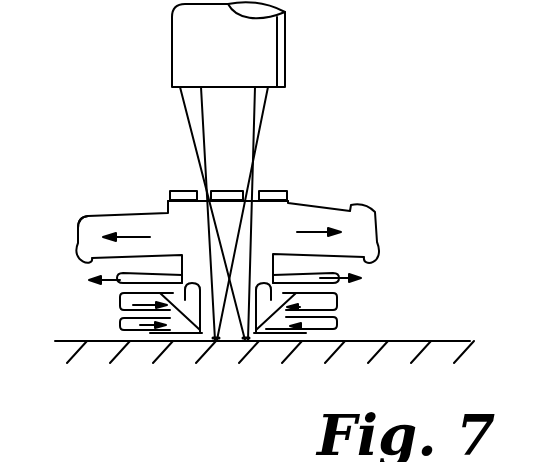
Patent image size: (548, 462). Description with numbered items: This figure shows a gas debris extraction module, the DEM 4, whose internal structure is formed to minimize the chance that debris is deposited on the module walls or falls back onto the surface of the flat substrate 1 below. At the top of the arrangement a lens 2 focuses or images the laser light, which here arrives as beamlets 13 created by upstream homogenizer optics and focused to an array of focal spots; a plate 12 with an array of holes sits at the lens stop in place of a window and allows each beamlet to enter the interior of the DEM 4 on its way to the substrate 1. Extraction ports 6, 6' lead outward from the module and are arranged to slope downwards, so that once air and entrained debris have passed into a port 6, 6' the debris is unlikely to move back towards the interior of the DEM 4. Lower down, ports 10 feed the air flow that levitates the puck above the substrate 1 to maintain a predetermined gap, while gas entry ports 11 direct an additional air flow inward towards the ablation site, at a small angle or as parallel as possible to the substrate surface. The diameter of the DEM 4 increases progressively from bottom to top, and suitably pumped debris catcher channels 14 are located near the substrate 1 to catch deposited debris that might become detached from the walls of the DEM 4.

The substrate 1 is at (363, 340).
The lens 2 is at (287, 43).
The DEM 4 is at (291, 201).
The port 6 is at (251, 214).
The port 6' is at (103, 186).
The ports 10 is at (338, 312).
The gas entry ports 11 is at (340, 293).
The plate 12 is at (272, 189).
The beamlets 13 is at (257, 105).
The debris catcher channels 14 is at (183, 287).